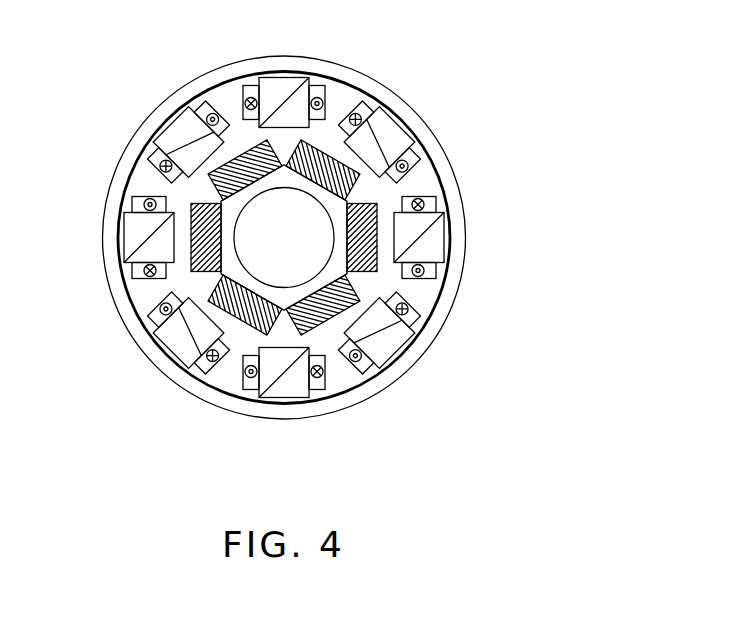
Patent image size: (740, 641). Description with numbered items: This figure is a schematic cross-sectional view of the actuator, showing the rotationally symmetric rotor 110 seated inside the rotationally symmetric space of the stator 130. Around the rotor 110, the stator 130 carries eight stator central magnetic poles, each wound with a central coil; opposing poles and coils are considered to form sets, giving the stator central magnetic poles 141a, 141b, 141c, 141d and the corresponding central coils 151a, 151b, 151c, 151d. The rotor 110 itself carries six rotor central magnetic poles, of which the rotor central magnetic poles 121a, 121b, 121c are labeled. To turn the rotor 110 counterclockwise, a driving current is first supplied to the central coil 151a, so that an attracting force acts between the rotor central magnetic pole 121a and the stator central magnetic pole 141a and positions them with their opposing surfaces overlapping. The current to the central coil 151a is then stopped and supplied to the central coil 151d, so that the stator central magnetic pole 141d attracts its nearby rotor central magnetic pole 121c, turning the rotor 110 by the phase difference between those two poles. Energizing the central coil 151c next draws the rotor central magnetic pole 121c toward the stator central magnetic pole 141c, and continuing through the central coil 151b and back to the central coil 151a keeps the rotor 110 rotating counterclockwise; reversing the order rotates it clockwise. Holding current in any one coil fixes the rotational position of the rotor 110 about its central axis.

The rotor 110 is at (383, 201).
The rotor central magnetic pole 121a is at (376, 260).
The rotor central magnetic pole 121b is at (241, 150).
The rotor central magnetic pole 121c is at (336, 151).
The stator 130 is at (111, 150).
The stator central magnetic pole 141a is at (443, 226).
The stator central magnetic pole 141b is at (390, 138).
The stator central magnetic pole 141c is at (288, 92).
The stator central magnetic pole 141d is at (169, 137).
The central coil 151a is at (437, 277).
The central coil 151b is at (410, 165).
The central coil 151c is at (325, 98).
The central coil 151d is at (208, 114).